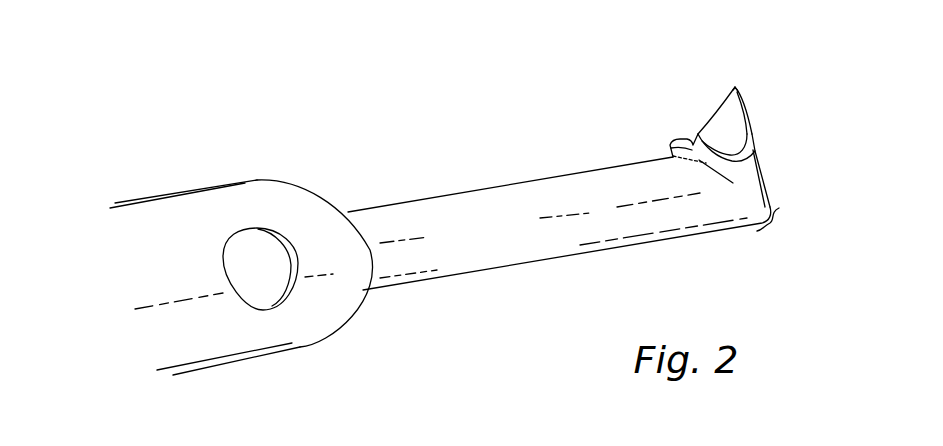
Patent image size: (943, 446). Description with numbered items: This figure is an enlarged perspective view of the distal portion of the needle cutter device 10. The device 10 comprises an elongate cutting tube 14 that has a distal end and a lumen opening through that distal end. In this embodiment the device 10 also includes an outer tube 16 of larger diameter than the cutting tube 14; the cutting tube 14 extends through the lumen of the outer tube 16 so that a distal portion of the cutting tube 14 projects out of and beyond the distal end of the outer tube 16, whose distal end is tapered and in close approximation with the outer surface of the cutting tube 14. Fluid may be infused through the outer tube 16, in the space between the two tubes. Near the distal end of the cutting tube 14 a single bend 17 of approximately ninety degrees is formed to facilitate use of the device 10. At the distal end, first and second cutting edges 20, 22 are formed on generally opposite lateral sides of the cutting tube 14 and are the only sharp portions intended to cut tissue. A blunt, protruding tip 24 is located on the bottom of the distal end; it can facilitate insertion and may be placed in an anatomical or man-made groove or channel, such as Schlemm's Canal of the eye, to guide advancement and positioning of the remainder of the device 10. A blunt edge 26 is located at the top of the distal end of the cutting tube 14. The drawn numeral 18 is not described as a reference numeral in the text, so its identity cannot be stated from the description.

The needle cutter device 10 is at (458, 198).
The cutting tube 14 is at (480, 203).
The outer tube 16 is at (168, 217).
The bend 17 is at (781, 226).
The end face 18 is at (760, 173).
The first cutting edge 20 is at (668, 134).
The second cutting edge 22 is at (743, 140).
The blunt protruding tip 24 is at (737, 88).
The blunt edge 26 is at (685, 140).